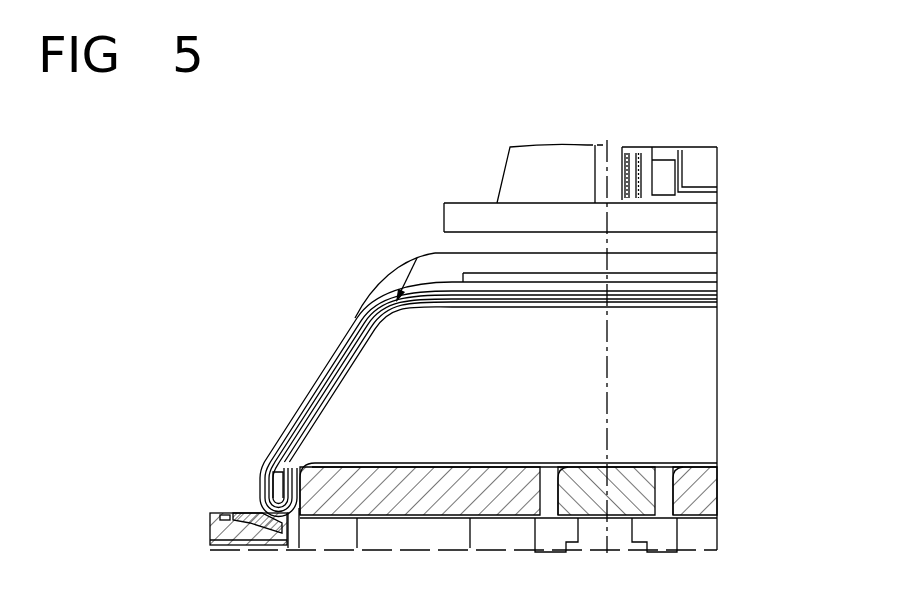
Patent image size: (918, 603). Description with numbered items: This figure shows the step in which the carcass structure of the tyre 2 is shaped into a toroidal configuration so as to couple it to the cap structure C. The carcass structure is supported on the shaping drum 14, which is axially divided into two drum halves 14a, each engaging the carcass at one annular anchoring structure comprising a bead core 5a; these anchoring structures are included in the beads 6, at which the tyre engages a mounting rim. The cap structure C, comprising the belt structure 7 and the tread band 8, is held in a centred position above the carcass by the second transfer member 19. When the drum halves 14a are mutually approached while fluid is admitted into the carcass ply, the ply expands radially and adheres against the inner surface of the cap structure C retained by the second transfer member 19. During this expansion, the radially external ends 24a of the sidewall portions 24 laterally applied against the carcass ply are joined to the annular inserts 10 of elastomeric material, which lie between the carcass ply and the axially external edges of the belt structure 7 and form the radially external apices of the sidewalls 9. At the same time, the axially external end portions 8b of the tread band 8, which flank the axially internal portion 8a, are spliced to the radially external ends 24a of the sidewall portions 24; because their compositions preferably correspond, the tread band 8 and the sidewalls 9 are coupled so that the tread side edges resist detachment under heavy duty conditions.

The tyre 2 is at (415, 233).
The second transfer member 19 is at (478, 215).
The belt structure 7 is at (514, 262).
The axially internal portion of the tread band 8a is at (588, 267).
The axially external end portions of the tread band 8b is at (388, 282).
The tread band 8 is at (710, 265).
The cap structure C is at (737, 240).
The radially external ends of the sidewall portions 24a is at (357, 306).
The sidewall portions 24 is at (343, 340).
The sidewalls 9 is at (299, 372).
The bead core 5a is at (278, 466).
The beads 6 is at (258, 483).
The annular inserts 10 is at (454, 307).
The drum halves 14a is at (490, 488).
The shaping drum 14 is at (657, 452).